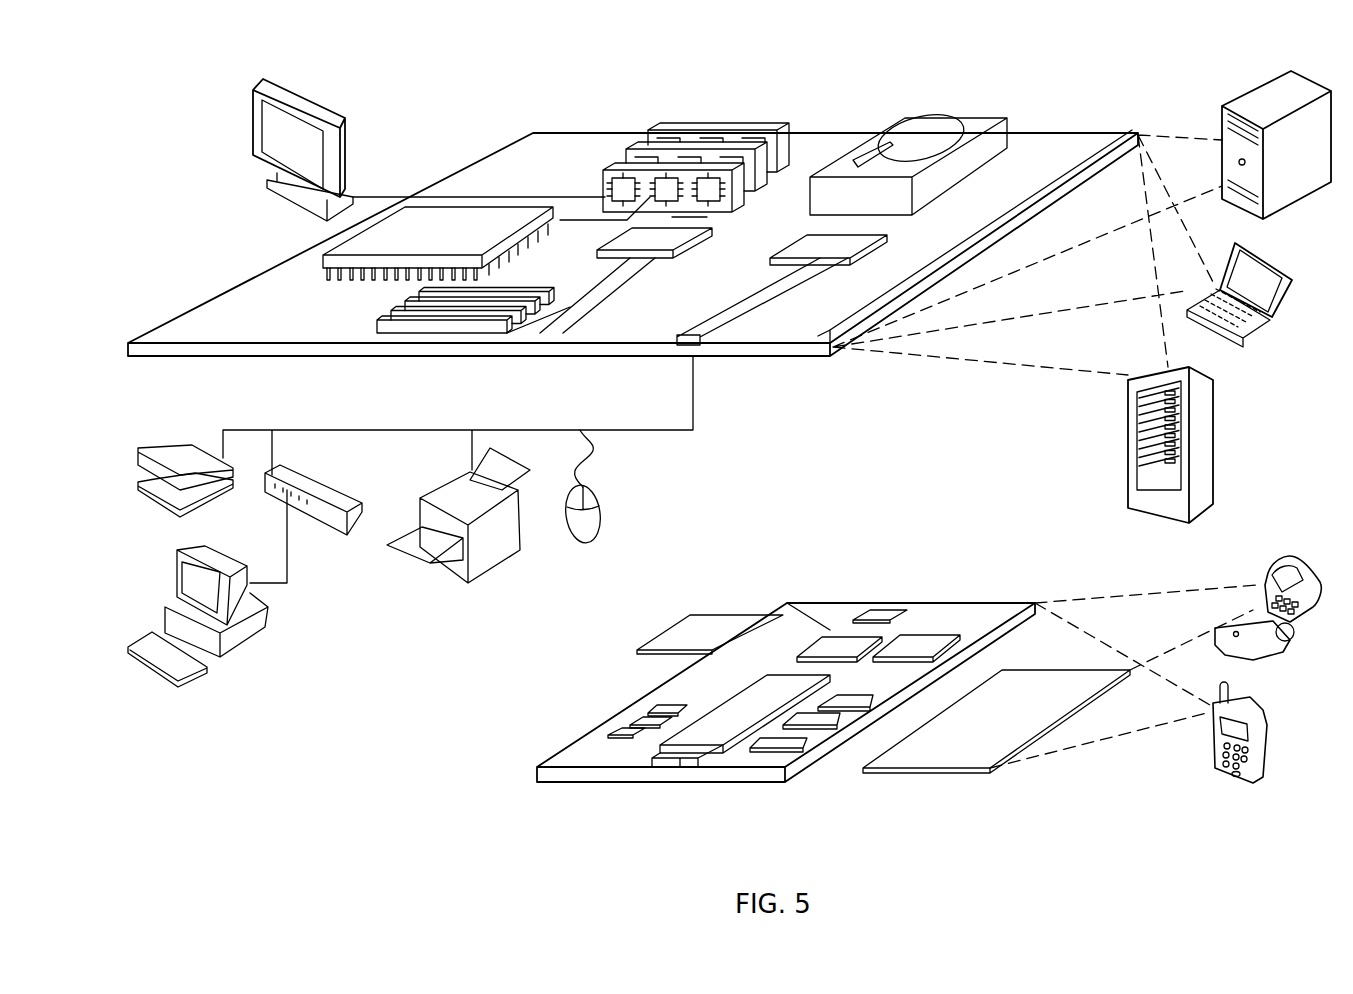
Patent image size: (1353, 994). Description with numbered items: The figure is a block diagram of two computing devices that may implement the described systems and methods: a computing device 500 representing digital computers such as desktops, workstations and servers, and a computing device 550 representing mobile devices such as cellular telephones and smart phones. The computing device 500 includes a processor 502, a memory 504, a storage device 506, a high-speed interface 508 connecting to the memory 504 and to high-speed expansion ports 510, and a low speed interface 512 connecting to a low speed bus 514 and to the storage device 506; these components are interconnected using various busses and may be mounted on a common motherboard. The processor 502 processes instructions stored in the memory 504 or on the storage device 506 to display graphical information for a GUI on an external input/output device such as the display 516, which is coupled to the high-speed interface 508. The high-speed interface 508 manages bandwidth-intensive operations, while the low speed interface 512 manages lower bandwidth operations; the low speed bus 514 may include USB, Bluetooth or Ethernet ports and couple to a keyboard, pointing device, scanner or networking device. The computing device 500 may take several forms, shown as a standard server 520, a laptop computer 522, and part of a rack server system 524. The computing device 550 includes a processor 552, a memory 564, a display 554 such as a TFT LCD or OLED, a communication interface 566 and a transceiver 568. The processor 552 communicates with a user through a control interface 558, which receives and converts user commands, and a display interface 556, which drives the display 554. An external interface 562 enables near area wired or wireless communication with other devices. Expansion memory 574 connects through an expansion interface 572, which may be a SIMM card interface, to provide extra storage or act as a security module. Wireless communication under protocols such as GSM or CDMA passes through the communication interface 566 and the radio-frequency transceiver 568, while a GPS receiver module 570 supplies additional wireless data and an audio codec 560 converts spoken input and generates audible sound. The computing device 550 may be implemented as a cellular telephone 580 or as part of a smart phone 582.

The computing device 500 is at (456, 113).
The processor 502 is at (333, 257).
The memory 504 is at (662, 131).
The storage device 506 is at (905, 125).
The high-speed interface 508 is at (632, 242).
The high-speed expansion ports 510 is at (393, 317).
The low speed interface 512 is at (808, 244).
The low speed bus 514 is at (707, 345).
The display 516 is at (262, 88).
The standard server 520 is at (1222, 120).
The laptop computer 522 is at (1291, 270).
The rack server system 524 is at (1128, 469).
The computing device 550 is at (516, 777).
The processor 552 is at (717, 735).
The display 554 is at (958, 758).
The display interface 556 is at (785, 747).
The control interface 558 is at (818, 723).
The audio codec 560 is at (843, 701).
The external interface 562 is at (680, 770).
The memory 564 is at (630, 723).
The communication interface 566 is at (840, 640).
The transceiver 568 is at (917, 640).
The GPS receiver module 570 is at (888, 607).
The expansion interface 572 is at (767, 617).
The expansion memory 574 is at (690, 615).
The cellular telephone 580 is at (1274, 568).
The smart phone 582 is at (1213, 740).